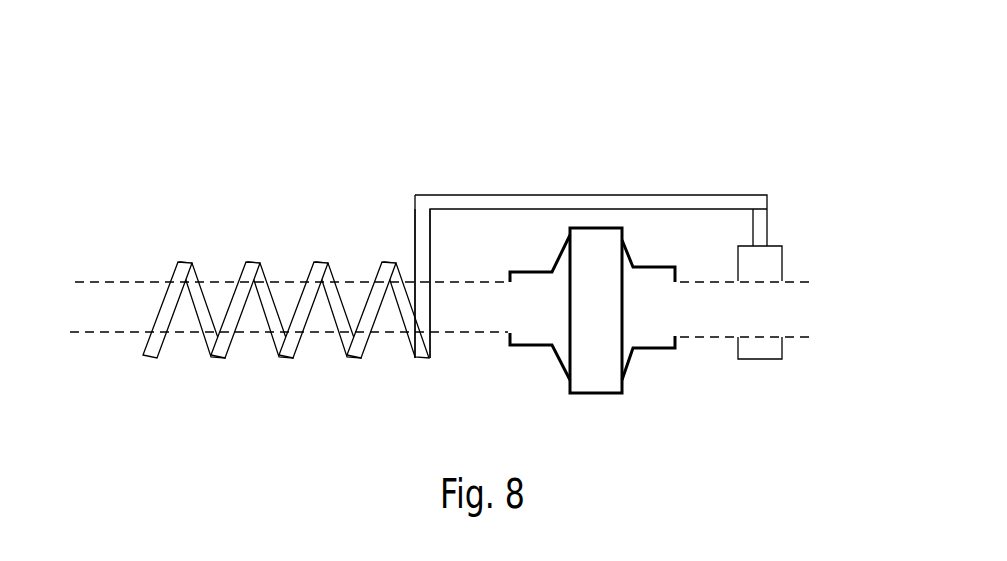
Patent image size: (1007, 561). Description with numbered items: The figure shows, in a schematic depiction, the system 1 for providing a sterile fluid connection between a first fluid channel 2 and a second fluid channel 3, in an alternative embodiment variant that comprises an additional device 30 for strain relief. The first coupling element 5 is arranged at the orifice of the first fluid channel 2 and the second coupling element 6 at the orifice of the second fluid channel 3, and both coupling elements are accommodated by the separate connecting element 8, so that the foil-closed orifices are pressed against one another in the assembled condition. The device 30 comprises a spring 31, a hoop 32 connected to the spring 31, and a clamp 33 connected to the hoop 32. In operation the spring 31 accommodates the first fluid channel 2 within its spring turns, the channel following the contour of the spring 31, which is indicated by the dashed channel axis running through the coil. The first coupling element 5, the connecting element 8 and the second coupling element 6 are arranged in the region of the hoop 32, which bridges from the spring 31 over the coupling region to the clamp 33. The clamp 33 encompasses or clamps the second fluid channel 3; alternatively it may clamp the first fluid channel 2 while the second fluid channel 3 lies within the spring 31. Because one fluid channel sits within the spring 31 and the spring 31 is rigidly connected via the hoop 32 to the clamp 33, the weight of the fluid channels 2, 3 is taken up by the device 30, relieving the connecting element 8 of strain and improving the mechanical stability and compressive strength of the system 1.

The system 1 is at (567, 190).
The first fluid channel 2 is at (493, 305).
The second fluid channel 3 is at (688, 323).
The first coupling element 5 is at (527, 345).
The second coupling element 6 is at (657, 267).
The connecting element 8 is at (600, 228).
The device for strain relief 30 is at (375, 185).
The spring 31 is at (233, 238).
The hoop 32 is at (562, 185).
The clamp 33 is at (780, 235).